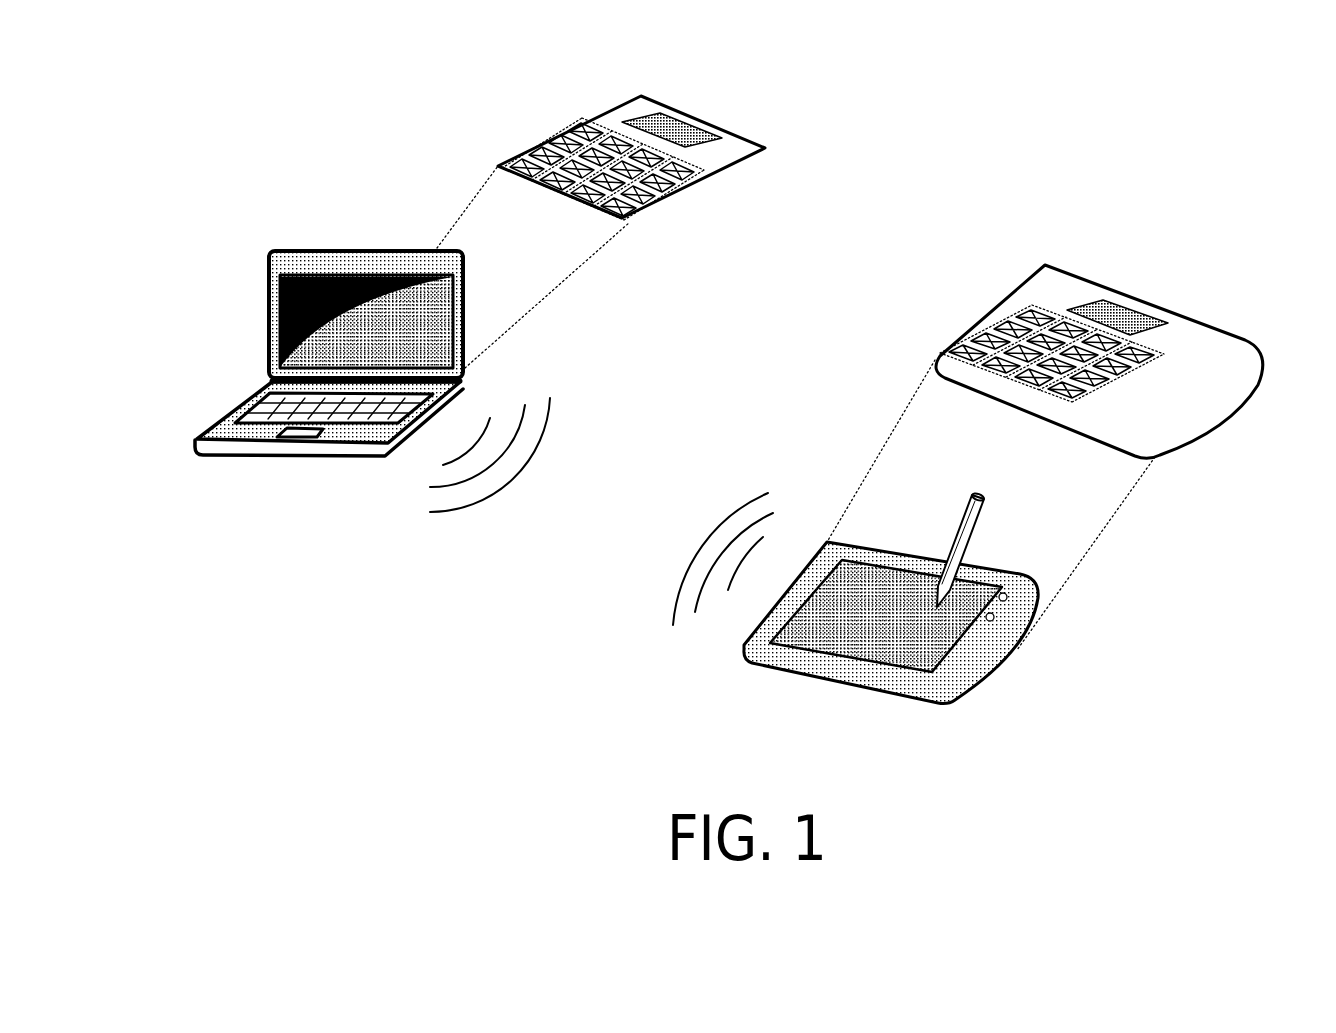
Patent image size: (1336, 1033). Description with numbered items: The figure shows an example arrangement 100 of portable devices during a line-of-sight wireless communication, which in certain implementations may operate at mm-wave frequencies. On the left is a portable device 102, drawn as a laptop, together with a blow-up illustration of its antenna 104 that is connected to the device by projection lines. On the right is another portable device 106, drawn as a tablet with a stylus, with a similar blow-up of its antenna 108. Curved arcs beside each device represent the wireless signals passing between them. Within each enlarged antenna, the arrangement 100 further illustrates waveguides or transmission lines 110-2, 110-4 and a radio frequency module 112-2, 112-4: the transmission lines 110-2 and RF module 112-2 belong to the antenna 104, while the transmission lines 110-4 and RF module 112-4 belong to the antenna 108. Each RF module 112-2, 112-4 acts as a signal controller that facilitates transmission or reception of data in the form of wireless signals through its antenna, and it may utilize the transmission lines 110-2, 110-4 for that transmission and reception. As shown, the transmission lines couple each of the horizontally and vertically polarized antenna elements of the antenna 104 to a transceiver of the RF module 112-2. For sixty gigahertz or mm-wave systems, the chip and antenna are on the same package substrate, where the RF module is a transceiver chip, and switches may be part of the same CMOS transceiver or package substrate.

The arrangement 100 is at (226, 86).
The portable device 102 is at (270, 251).
The antenna 104 is at (568, 130).
The portable device 106 is at (863, 688).
The antenna 108 is at (977, 313).
The transmission lines 110-2 is at (710, 163).
The transmission lines 110-4 is at (1155, 353).
The RF module 112-2 is at (678, 128).
The RF module 112-4 is at (1130, 315).